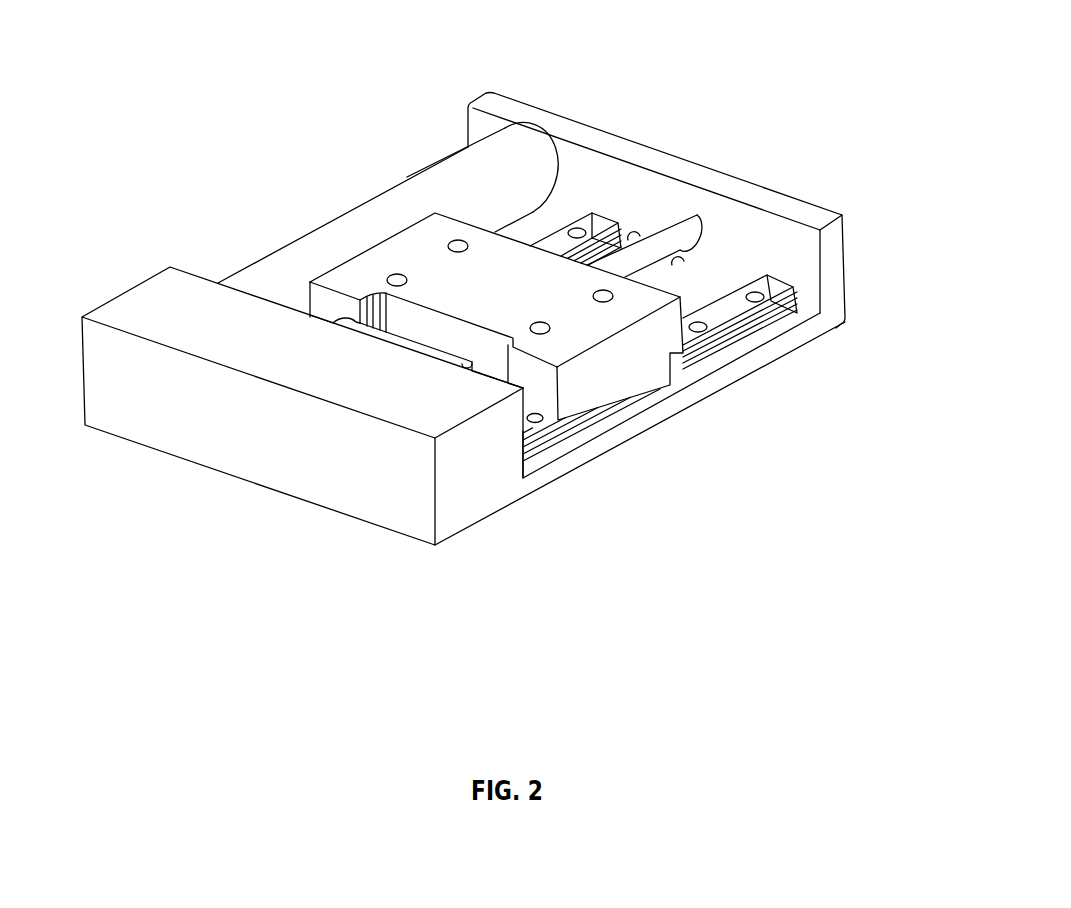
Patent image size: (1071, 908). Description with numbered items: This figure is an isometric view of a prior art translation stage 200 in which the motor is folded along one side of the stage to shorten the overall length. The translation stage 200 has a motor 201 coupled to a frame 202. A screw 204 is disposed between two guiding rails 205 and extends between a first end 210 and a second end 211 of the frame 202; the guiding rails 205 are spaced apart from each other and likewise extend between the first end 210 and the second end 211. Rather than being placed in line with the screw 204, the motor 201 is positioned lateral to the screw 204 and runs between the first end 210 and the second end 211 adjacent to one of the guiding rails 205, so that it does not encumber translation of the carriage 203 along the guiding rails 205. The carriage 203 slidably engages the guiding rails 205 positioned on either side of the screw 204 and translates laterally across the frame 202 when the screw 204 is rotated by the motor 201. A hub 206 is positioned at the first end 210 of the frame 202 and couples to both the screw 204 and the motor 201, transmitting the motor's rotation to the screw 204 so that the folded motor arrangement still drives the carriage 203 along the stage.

The translation stage 200 is at (885, 127).
The motor 201 is at (355, 237).
The frame 202 is at (550, 125).
The carriage 203 is at (515, 283).
The screw 204 is at (658, 253).
The guiding rails 205 is at (733, 318).
The hub 206 is at (207, 330).
The first end 210 is at (106, 275).
The second end 211 is at (438, 105).